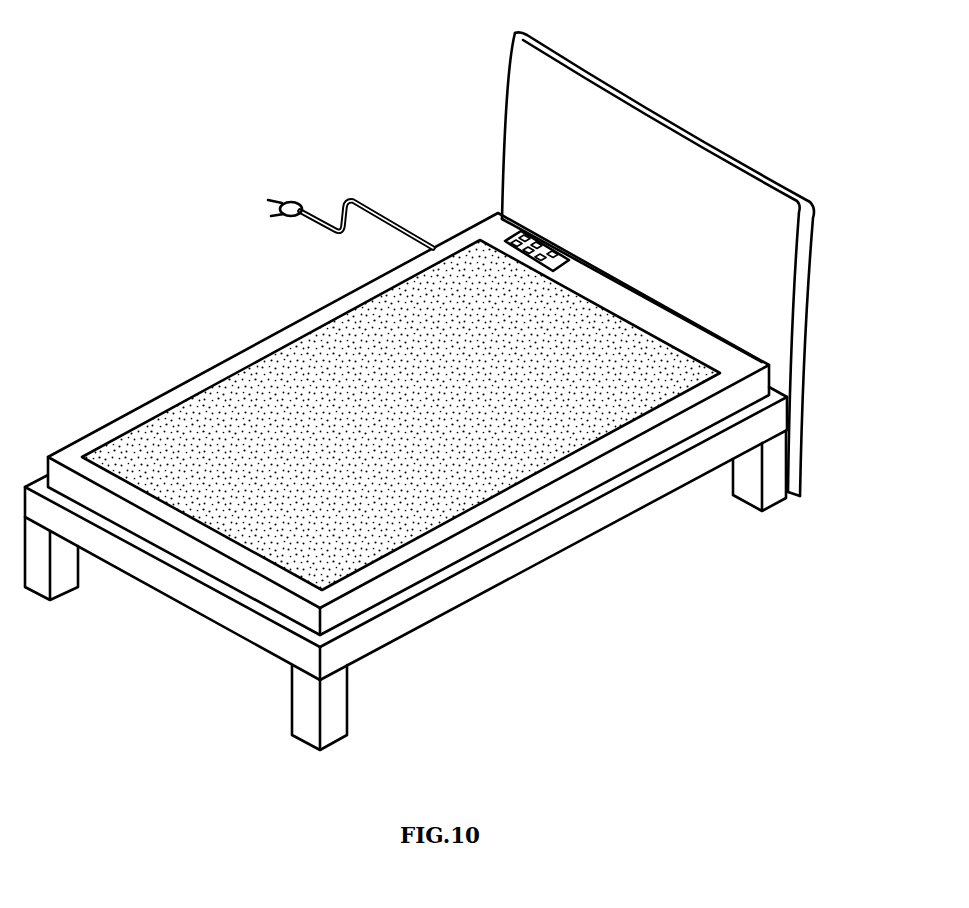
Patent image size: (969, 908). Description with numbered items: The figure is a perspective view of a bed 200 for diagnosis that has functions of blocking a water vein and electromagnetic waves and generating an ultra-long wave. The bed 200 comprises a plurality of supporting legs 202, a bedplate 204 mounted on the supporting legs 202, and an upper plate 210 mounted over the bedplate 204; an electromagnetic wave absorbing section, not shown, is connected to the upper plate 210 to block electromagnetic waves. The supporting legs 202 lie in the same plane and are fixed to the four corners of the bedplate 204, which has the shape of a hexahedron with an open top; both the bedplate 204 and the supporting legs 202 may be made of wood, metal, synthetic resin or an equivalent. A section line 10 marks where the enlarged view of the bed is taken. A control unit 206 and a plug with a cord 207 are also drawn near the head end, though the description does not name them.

The bed 200 is at (448, 410).
The section line 10— 10 is at (525, 463).
The supporting legs 202 is at (333, 708).
The bedplate 204 is at (447, 597).
The controller 206 is at (497, 214).
The power plug and cord 207 is at (295, 200).
The upper plate 210 is at (738, 395).